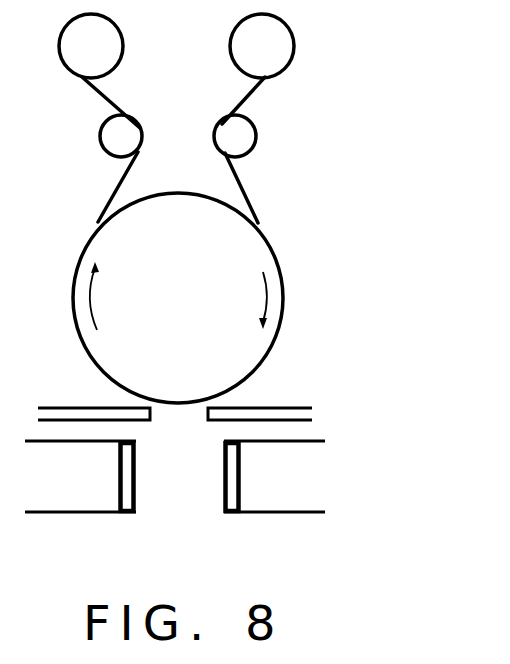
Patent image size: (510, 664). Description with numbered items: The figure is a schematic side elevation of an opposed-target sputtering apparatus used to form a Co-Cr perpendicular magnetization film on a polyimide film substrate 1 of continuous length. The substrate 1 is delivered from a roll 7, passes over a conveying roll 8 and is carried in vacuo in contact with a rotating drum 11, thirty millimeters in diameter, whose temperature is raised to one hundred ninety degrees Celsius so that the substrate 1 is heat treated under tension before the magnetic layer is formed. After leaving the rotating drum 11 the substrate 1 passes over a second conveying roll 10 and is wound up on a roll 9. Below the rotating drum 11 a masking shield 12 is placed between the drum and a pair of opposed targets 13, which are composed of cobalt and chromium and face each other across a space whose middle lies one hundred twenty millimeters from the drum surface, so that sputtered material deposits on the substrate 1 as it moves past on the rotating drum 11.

The polyimide film substrate 1 is at (262, 90).
The roll 7 is at (283, 49).
The conveying roll 8 is at (248, 137).
The roll 9 is at (113, 49).
The conveying roll 10 is at (130, 137).
The rotating drum 11 is at (247, 250).
The masking shield 12 is at (268, 405).
The targets 13 is at (135, 477).